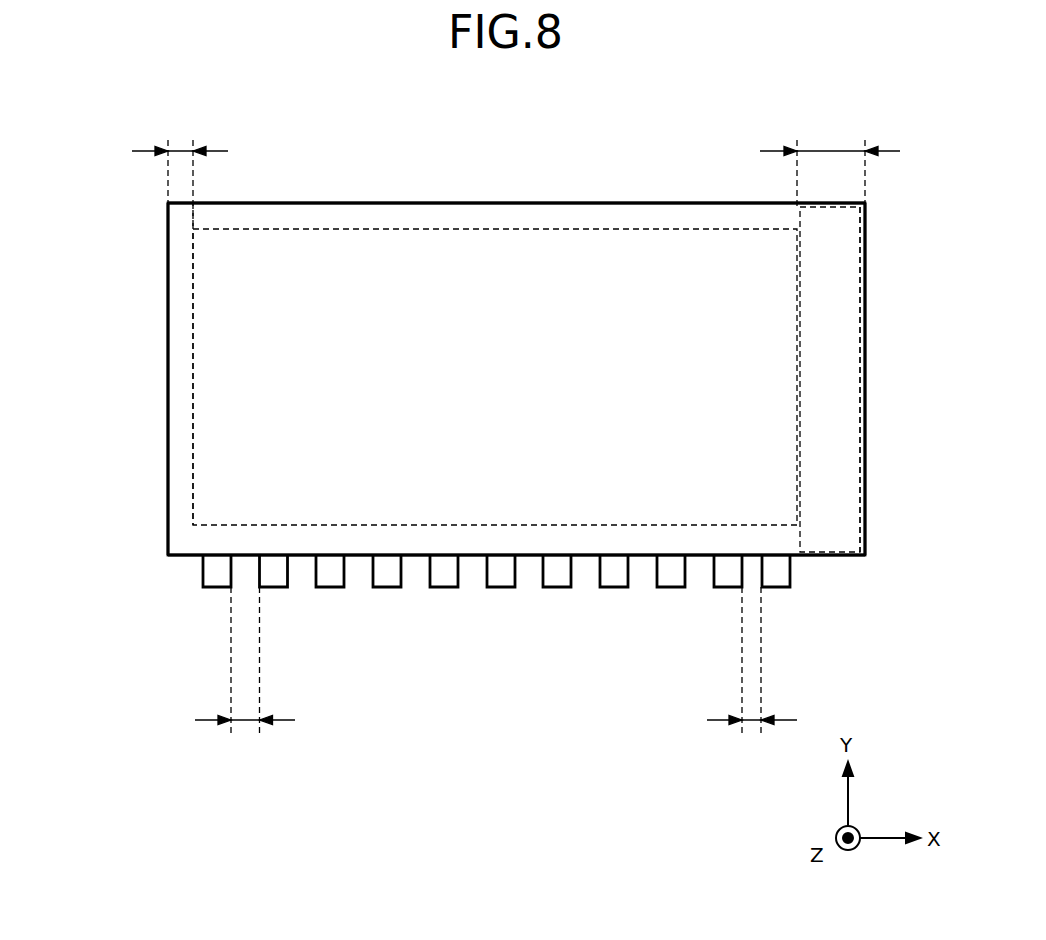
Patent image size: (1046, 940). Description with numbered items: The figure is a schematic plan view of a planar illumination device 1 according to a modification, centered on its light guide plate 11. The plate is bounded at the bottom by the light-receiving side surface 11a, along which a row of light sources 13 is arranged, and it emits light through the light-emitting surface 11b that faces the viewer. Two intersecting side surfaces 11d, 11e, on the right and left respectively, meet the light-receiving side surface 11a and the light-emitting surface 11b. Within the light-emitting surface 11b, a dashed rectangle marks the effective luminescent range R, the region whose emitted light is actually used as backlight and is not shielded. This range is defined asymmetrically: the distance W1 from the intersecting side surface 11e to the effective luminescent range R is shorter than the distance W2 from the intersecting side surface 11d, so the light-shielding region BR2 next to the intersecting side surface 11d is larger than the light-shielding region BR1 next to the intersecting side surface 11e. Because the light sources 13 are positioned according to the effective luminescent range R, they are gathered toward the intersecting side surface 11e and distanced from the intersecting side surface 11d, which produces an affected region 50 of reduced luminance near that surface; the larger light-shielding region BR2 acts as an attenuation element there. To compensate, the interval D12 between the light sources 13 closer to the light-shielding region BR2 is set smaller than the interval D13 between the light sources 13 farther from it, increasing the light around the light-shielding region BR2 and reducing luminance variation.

The planar illumination device 1 is at (76, 135).
The light guide plate 11 is at (168, 254).
The light-receiving side surface 11a is at (187, 553).
The light-emitting surface 11b is at (532, 290).
The intersecting side surface 11d is at (866, 405).
The intersecting side surface 11e is at (168, 402).
The light sources 13 is at (203, 571).
The affected region 50 is at (835, 289).
The effective luminescent range R is at (400, 228).
The light-shielding region BR1 is at (185, 327).
The light-shielding region BR2 is at (835, 330).
The distance W1 is at (182, 150).
The distance W2 is at (831, 150).
The interval D12 is at (752, 722).
The interval D13 is at (245, 722).